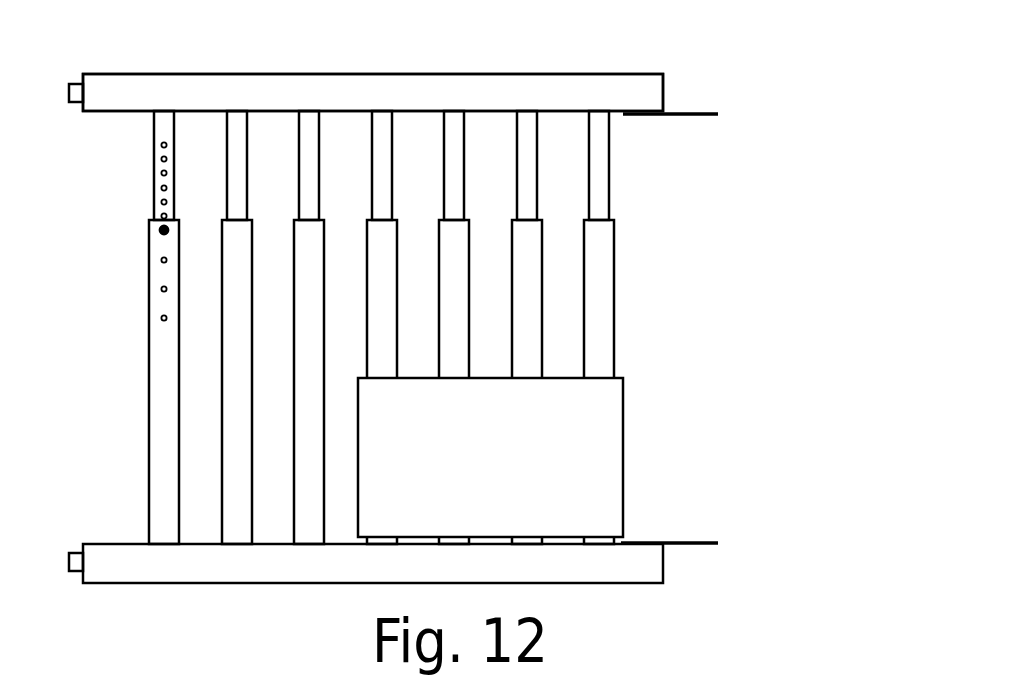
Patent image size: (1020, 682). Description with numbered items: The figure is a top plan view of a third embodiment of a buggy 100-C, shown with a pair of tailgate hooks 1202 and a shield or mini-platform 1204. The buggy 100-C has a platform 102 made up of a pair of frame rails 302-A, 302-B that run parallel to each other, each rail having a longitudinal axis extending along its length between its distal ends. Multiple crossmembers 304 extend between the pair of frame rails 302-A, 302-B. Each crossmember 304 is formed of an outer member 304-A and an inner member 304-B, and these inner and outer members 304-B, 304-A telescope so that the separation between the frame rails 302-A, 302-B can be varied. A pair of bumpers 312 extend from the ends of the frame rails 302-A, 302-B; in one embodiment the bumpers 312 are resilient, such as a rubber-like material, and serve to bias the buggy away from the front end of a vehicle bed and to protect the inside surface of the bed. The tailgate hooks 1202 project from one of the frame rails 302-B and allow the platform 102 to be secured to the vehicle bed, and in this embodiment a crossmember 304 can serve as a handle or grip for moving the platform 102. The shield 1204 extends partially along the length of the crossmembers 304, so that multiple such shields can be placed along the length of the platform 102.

The buggy 100-C is at (790, 87).
The platform 102 is at (549, 74).
The frame rail 302-A is at (204, 74).
The frame rail 302-B is at (118, 544).
The bumper 312 is at (73, 104).
The crossmember 304 is at (149, 419).
The outer member 304-A is at (614, 331).
The inner member 304-B is at (609, 207).
The tailgate hook 1202 is at (668, 116).
The shield 1204 is at (623, 398).